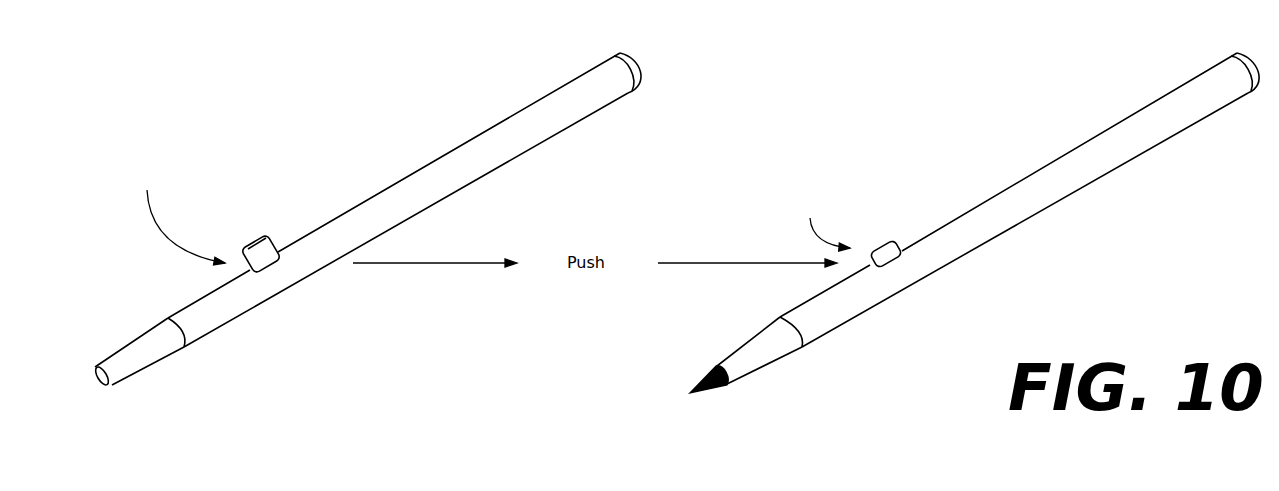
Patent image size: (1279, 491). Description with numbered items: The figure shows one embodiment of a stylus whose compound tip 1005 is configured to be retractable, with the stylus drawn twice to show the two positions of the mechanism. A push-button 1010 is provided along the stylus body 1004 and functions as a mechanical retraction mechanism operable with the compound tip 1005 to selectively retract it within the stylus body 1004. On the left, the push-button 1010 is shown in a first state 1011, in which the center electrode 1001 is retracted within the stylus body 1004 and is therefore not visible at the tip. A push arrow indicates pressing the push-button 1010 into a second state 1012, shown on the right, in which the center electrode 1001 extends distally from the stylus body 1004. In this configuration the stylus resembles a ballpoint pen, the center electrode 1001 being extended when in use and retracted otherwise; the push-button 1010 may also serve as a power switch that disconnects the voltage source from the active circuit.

The center electrode 1001 is at (701, 373).
The stylus body 1004 is at (455, 172).
The compound tip 1005 is at (100, 402).
The push-button 1010 is at (263, 232).
The first state 1011 is at (174, 213).
The second state 1012 is at (826, 225).